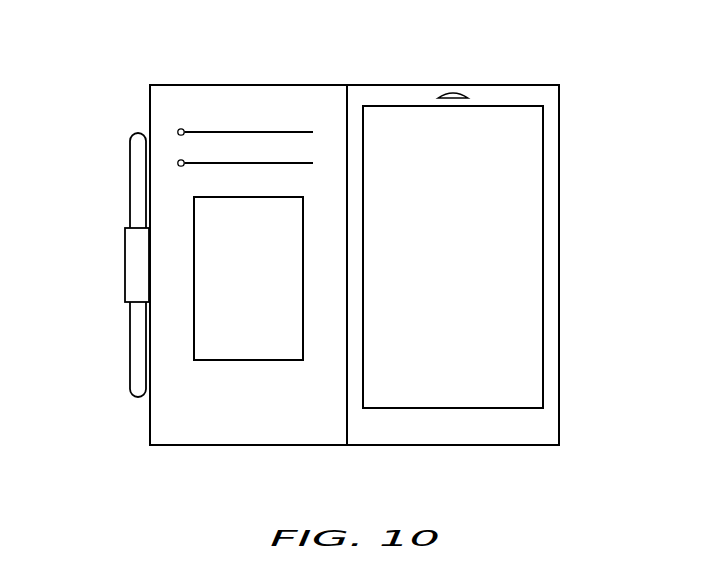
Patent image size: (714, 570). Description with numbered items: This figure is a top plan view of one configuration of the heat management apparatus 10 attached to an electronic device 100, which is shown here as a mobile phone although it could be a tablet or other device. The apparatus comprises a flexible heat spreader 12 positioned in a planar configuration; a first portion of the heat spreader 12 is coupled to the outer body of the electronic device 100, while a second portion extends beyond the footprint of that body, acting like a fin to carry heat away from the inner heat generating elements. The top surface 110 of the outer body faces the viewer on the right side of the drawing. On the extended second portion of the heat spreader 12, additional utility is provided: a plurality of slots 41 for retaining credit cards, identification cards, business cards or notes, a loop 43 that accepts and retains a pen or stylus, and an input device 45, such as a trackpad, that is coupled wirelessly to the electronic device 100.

The heat management apparatus 10 is at (200, 85).
The heat spreader 12 is at (283, 100).
The slots 41 is at (178, 117).
The loop 43 is at (125, 266).
The input device 45 is at (212, 361).
The electronic device 100 is at (407, 84).
The top surface 110 is at (543, 143).